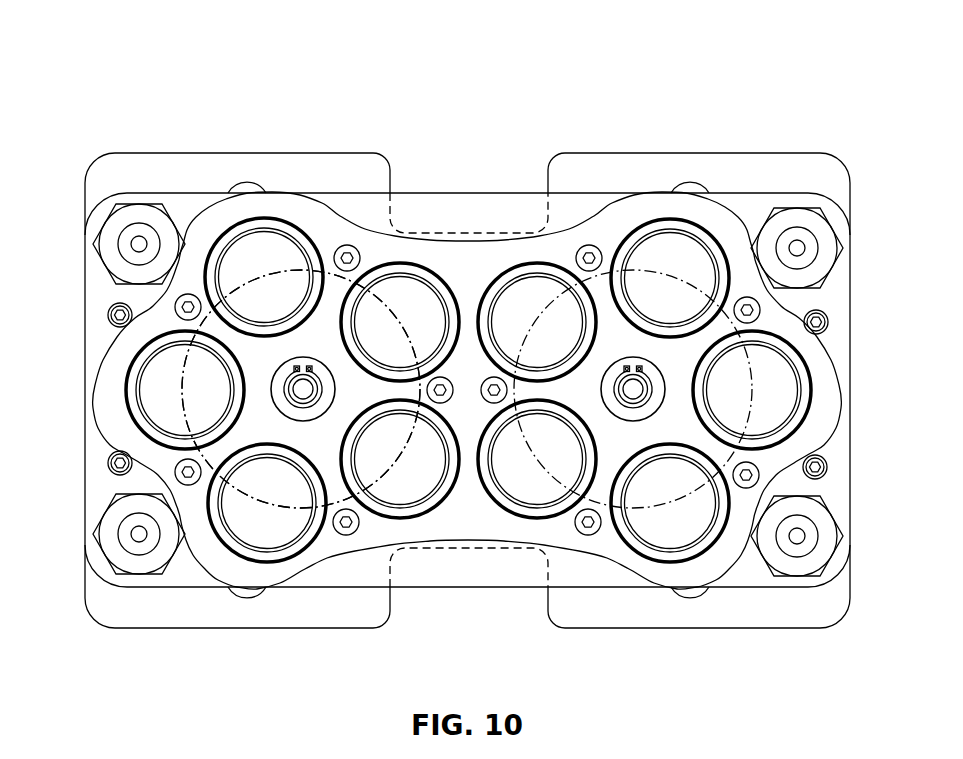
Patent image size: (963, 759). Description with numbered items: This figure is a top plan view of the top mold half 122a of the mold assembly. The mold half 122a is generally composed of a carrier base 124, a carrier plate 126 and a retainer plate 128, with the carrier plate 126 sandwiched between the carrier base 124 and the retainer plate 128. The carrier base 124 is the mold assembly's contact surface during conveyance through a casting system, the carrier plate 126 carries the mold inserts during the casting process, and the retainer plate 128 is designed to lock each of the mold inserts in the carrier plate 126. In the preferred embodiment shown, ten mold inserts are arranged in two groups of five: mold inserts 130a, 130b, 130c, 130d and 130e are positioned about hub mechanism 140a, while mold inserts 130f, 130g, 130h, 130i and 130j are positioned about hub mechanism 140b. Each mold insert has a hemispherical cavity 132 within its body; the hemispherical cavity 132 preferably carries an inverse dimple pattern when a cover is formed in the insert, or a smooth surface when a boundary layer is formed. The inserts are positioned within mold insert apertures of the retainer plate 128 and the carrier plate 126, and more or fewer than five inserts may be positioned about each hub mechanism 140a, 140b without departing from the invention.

The mold half 122a is at (234, 62).
The carrier base 124 is at (146, 155).
The carrier plate 126 is at (483, 202).
The retainer plate 128 is at (353, 227).
The mold insert 130a is at (293, 222).
The mold insert 130b is at (427, 266).
The mold insert 130c is at (422, 517).
The mold insert 130d is at (297, 553).
The mold insert 130e is at (127, 385).
The mold insert 130f is at (550, 264).
The mold insert 130g is at (715, 240).
The mold insert 130h is at (806, 412).
The mold insert 130i is at (708, 550).
The mold insert 130j is at (525, 517).
The hemispherical cavity 132 is at (257, 270).
The hub mechanism 140a is at (267, 472).
The hub mechanism 140b is at (650, 307).